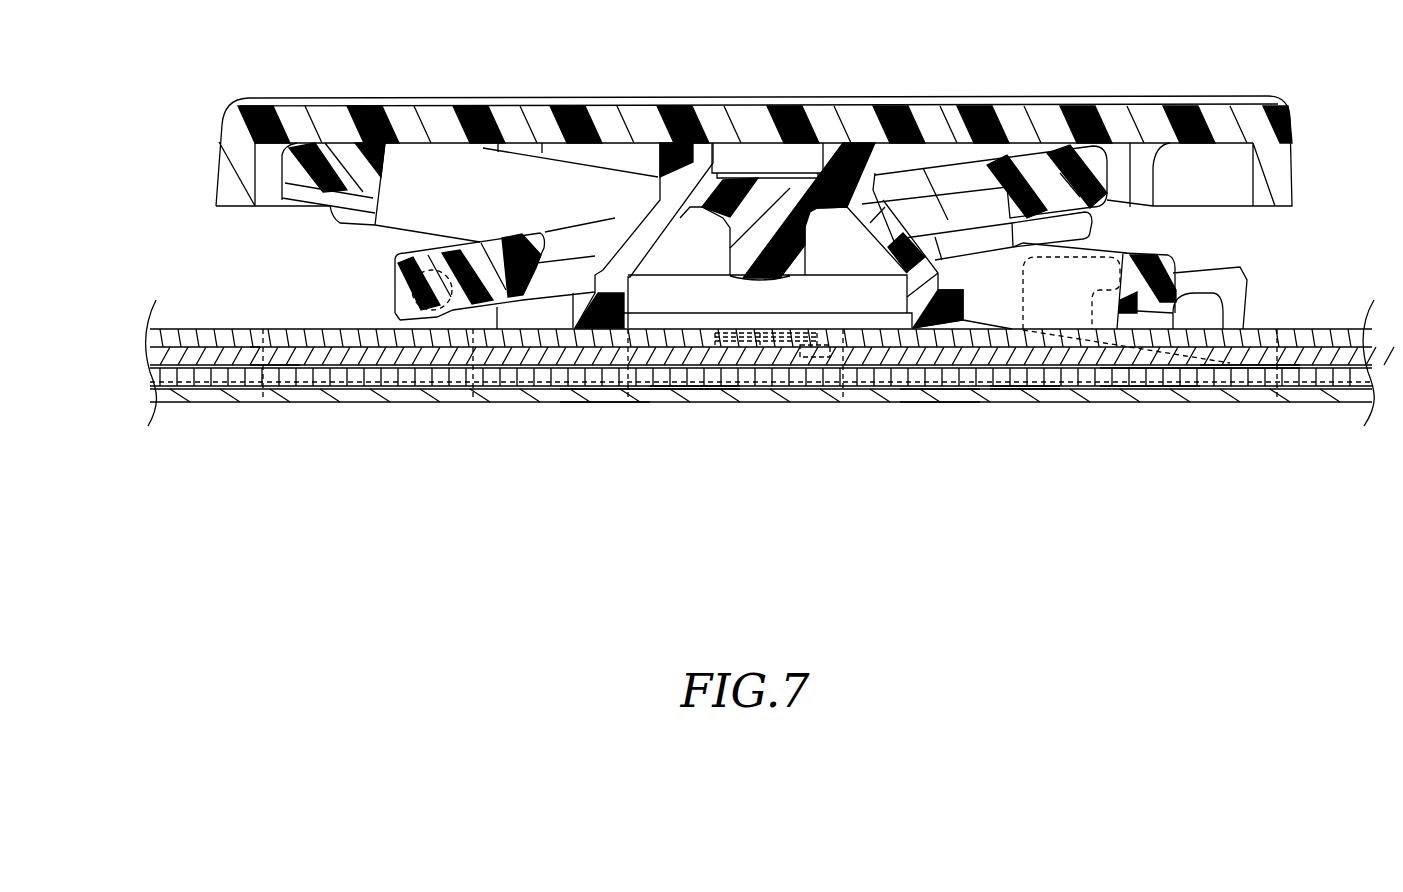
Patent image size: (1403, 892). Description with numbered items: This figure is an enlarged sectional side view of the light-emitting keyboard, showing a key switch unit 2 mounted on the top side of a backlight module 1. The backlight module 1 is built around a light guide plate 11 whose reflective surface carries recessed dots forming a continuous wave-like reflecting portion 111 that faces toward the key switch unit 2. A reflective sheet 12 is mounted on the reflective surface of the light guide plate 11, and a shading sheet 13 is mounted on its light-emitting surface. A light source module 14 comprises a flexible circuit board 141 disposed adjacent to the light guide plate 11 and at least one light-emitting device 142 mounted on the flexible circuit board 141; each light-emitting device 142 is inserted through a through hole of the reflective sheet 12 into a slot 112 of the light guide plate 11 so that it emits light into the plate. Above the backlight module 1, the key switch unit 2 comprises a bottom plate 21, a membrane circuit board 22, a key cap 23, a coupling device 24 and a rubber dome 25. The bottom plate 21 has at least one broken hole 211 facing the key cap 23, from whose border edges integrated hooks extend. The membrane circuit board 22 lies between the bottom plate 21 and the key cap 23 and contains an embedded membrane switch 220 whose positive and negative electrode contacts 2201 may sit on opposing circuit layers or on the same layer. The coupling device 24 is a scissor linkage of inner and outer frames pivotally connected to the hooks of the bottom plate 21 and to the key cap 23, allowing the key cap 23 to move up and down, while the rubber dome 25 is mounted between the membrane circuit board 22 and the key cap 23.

The backlight module 1 is at (1088, 400).
The light guide plate 11 is at (1162, 377).
The continuous wave-like reflecting portion 111 is at (1023, 383).
The slot 112 is at (941, 388).
The reflective sheet 12 is at (685, 387).
The shading sheet 13 is at (1248, 368).
The light source module 14 is at (521, 406).
The flexible circuit board 141 is at (604, 394).
The light-emitting device 142 is at (447, 378).
The key switch unit 2 is at (205, 204).
The bottom plate 21 is at (343, 358).
The broken hole 211 is at (290, 353).
The membrane circuit board 22 is at (222, 338).
The membrane switch 220 is at (769, 346).
The positive and negative electrode contacts 2201 is at (817, 358).
The key cap 23 is at (910, 127).
The coupling device 24 is at (1026, 167).
The rubber dome 25 is at (780, 223).